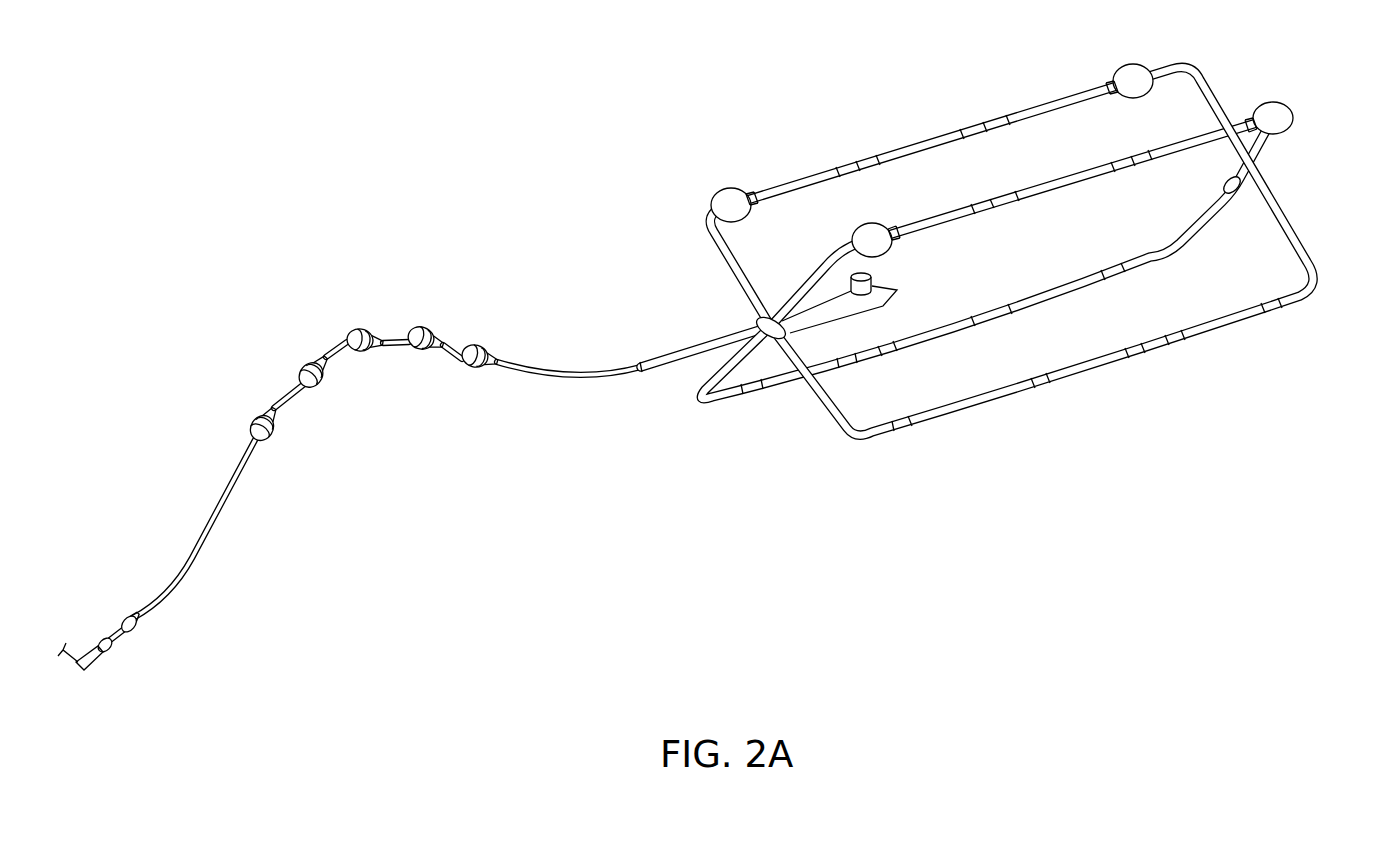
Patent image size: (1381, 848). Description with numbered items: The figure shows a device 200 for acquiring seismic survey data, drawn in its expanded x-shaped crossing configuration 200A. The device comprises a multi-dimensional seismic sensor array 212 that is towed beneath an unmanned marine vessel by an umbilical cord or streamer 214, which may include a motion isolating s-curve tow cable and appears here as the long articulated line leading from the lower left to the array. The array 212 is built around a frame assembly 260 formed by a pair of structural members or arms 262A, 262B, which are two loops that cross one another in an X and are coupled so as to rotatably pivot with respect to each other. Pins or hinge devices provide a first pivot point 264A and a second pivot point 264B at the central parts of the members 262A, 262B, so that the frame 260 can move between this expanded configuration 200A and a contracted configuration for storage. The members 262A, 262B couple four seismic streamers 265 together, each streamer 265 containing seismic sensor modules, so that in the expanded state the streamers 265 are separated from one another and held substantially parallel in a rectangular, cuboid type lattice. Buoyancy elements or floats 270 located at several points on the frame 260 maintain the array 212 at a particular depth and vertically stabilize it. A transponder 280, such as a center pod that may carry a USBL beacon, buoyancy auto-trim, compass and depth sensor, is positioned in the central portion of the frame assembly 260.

The device 200 is at (393, 60).
The expanded x-shaped crossing configuration 200A is at (713, 337).
The multi-dimensional seismic sensor array 212 is at (684, 88).
The umbilical cord or streamer 214 is at (242, 551).
The frame assembly 260 is at (1276, 152).
The first member 262A is at (1206, 90).
The second member 262B is at (1195, 242).
The first pivot point 264A is at (764, 338).
The second pivot point 264B is at (1250, 183).
The seismic streamers 265 is at (920, 222).
The buoyancy elements or floats 270 is at (1127, 72).
The transponder 280 is at (834, 316).